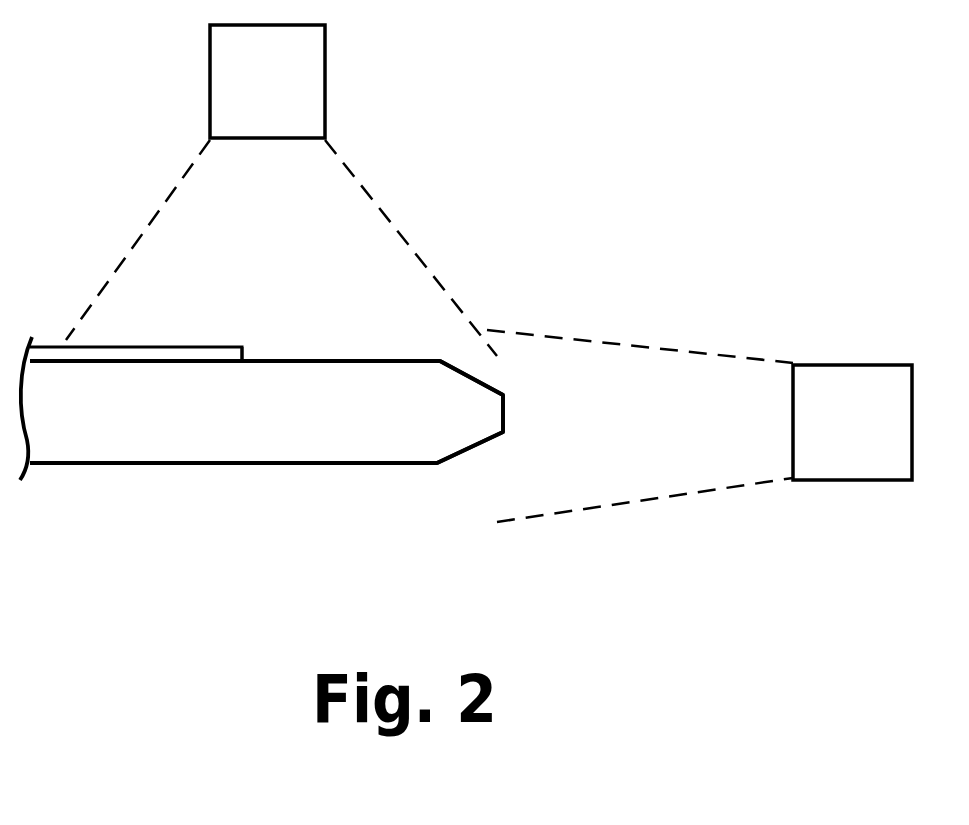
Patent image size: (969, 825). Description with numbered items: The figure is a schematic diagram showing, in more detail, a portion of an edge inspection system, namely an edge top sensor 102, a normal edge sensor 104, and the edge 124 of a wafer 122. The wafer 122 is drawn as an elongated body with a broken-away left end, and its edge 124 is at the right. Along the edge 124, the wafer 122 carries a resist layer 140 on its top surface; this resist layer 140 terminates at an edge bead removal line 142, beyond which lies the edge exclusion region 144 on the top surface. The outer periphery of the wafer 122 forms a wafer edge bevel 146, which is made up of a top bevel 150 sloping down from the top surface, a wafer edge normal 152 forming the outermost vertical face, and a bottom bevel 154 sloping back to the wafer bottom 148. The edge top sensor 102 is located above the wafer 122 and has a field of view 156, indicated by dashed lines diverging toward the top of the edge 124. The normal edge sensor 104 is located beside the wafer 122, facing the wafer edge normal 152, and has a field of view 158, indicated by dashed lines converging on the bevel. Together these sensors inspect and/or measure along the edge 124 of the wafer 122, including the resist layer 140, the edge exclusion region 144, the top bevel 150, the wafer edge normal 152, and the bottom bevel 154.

The edge top sensor 102 is at (325, 75).
The normal edge sensor 104 is at (830, 365).
The wafer 122 is at (113, 443).
The edge 124 is at (243, 541).
The resist layer 140 is at (176, 348).
The edge bead removal (EBR) line 142 is at (244, 358).
The edge exclusion region 144 is at (377, 362).
The wafer edge bevel 146 is at (592, 456).
The wafer bottom 148 is at (360, 465).
The top bevel 150 is at (484, 383).
The wafer edge normal 152 is at (505, 413).
The bottom bevel 154 is at (481, 447).
The field of view 156 is at (361, 194).
The field of view 158 is at (670, 366).